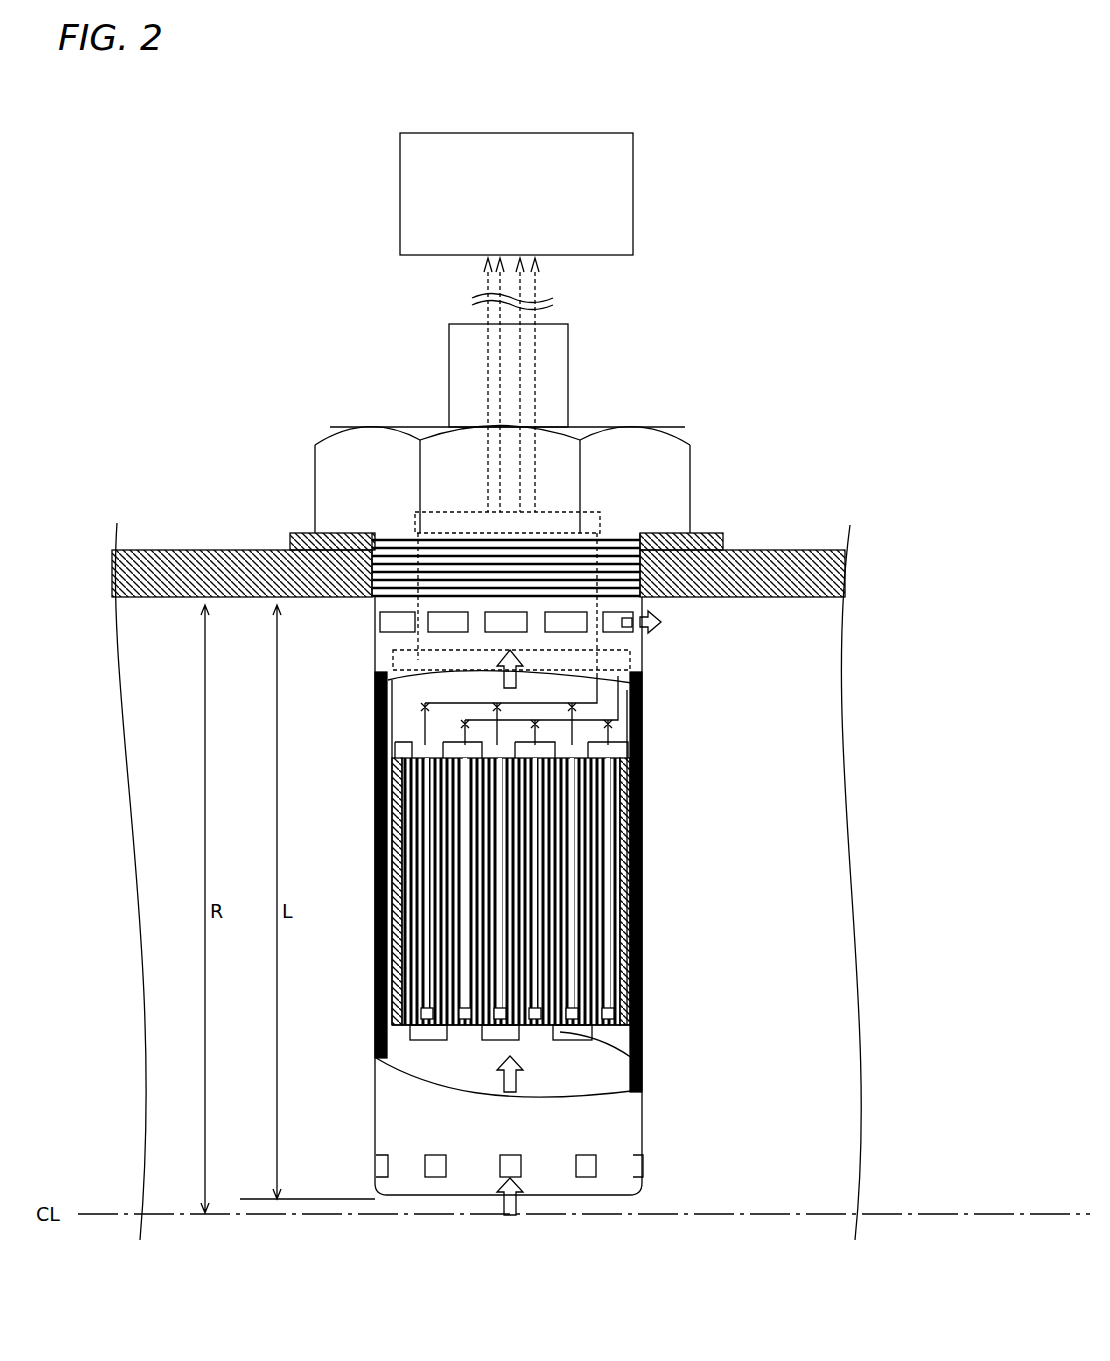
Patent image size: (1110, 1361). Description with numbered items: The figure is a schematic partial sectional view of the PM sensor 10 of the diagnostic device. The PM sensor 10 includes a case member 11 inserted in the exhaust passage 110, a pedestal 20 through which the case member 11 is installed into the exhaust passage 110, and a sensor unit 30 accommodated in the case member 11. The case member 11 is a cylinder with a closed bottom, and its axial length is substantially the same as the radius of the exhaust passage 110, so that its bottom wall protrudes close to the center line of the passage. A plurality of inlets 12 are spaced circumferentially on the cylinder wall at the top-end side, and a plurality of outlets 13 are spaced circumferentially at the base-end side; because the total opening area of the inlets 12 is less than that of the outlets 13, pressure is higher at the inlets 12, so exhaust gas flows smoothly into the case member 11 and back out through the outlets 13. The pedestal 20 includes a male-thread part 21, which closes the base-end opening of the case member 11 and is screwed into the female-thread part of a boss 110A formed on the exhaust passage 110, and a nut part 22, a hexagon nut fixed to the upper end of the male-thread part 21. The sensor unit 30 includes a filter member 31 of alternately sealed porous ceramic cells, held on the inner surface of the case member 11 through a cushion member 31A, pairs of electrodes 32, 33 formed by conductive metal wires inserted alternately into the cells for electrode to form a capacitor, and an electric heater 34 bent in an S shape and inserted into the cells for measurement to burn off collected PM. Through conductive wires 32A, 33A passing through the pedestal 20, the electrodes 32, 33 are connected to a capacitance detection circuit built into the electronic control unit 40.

The PM sensor 10 is at (387, 345).
The case member 11 is at (628, 1130).
The inlets 12 is at (438, 1170).
The outlets 13 is at (382, 622).
The pedestal 20 is at (778, 446).
The male-thread part 21 is at (690, 500).
The nut part 22 is at (640, 540).
The sensor unit 30 is at (706, 865).
The filter member 31 is at (642, 888).
The cushion member 31A is at (640, 810).
The electrode 32 is at (630, 925).
The conductive wire 32A is at (642, 688).
The electrode 33 is at (642, 956).
The conductive wire 33A is at (642, 722).
The electric heater 34 is at (642, 1058).
The electronic control unit 40 is at (504, 211).
The exhaust passage 110 is at (180, 550).
The boss 110A is at (300, 533).